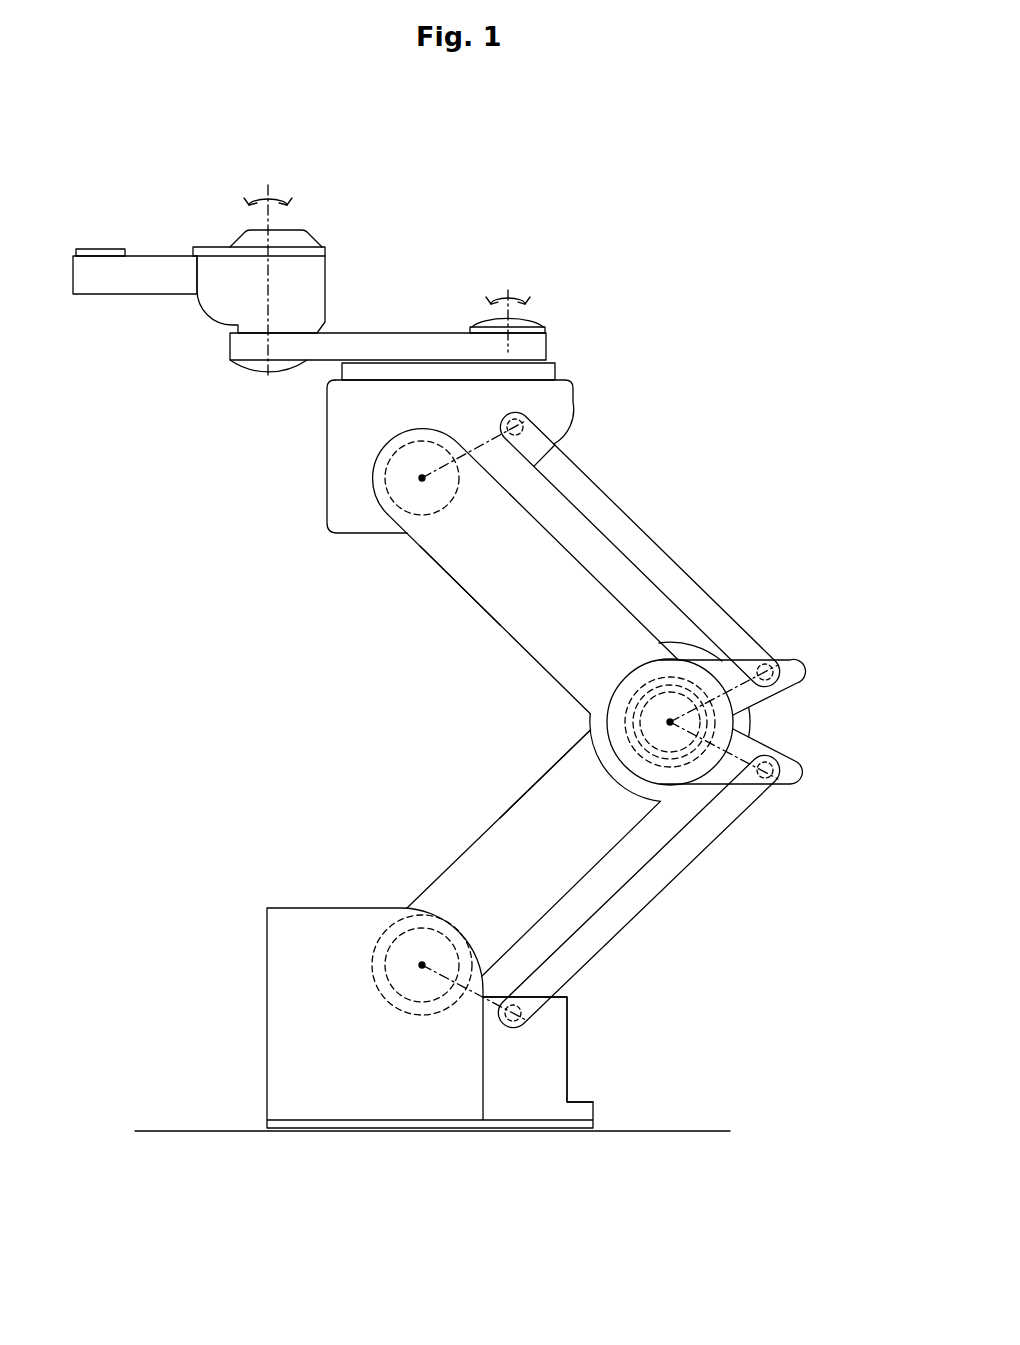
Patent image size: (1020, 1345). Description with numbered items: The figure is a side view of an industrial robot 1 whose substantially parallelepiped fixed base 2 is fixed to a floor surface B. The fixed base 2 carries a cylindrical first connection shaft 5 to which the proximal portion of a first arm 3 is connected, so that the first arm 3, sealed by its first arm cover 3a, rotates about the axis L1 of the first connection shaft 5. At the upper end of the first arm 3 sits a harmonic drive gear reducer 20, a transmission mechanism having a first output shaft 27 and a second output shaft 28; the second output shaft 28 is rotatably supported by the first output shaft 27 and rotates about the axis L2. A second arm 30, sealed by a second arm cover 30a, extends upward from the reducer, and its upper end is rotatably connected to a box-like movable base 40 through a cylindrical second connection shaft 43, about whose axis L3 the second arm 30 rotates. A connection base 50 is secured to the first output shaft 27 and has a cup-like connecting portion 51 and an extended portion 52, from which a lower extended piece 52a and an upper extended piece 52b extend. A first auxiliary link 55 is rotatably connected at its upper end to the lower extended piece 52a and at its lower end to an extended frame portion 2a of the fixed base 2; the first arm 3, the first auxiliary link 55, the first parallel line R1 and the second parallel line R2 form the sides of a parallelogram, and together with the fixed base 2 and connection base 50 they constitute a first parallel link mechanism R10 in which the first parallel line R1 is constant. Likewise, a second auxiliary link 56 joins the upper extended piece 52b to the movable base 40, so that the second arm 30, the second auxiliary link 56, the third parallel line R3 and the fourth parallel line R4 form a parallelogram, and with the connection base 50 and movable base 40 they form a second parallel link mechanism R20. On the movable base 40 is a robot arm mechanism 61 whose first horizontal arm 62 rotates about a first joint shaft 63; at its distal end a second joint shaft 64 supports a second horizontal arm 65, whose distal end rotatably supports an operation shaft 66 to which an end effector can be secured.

The industrial robot 1 is at (596, 260).
The fixed base 2 is at (267, 968).
The extended frame portion 2a is at (567, 1030).
The first arm 3 is at (507, 814).
The first arm cover 3a is at (553, 758).
The first connection shaft 5 is at (420, 1013).
The harmonic drive gear reducer 20 is at (590, 716).
The first output shaft 27 is at (645, 684).
The second output shaft 28 is at (613, 697).
The second arm 30 is at (503, 614).
The second arm cover 30a is at (458, 590).
The movable base 40 is at (327, 430).
The second connection shaft 43 is at (392, 505).
The connection base 50 is at (821, 655).
The connecting portion 51 is at (748, 722).
The extended portion 52 is at (862, 694).
The lower extended piece 52a is at (780, 748).
The upper extended piece 52b is at (780, 697).
The first auxiliary link 55 is at (680, 872).
The second auxiliary link 56 is at (641, 538).
The robot arm mechanism 61 is at (390, 311).
The first horizontal arm 62 is at (547, 350).
The first joint shaft 63 is at (547, 323).
The second joint shaft 64 is at (295, 230).
The second horizontal arm 65 is at (107, 296).
The operation shaft 66 is at (90, 249).
The first parallel line R1 is at (470, 1012).
The second parallel line R2 is at (765, 790).
The third parallel line R3 is at (764, 657).
The fourth parallel line R4 is at (478, 442).
The first parallel link mechanism R10 is at (780, 862).
The second parallel link mechanism R20 is at (668, 443).
The first rotational axis L1 is at (422, 965).
The axis L2 is at (670, 722).
The axis L3 is at (422, 478).
The floor surface B is at (683, 1129).